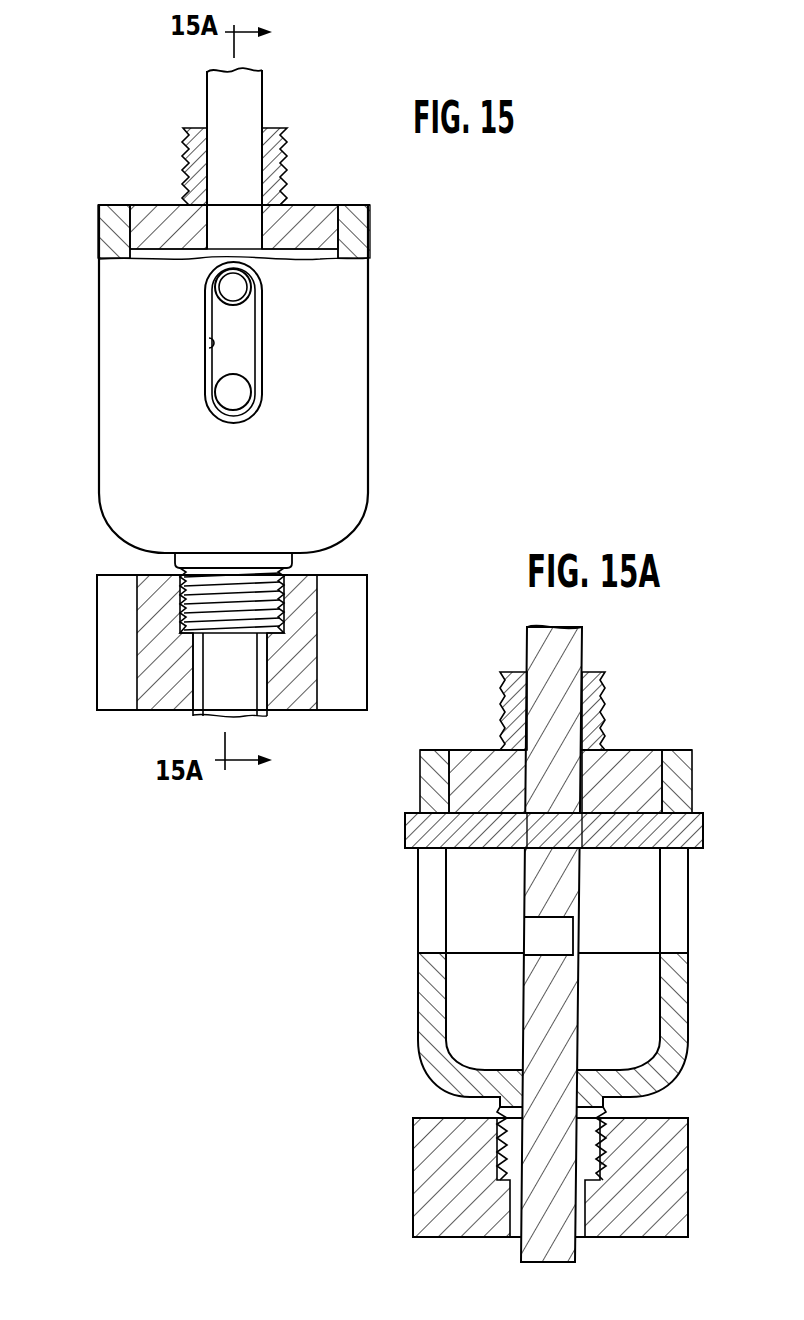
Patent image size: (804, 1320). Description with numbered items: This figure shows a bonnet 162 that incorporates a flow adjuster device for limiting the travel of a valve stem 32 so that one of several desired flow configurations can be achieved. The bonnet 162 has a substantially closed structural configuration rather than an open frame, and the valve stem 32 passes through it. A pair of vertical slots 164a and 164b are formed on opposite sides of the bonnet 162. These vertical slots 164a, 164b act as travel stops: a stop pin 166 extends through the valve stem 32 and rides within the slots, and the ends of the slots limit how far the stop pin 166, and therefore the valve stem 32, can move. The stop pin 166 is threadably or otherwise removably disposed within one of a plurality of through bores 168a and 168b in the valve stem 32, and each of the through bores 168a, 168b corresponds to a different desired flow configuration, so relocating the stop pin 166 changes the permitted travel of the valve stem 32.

In FIG. 15, the valve stem 32 is at (262, 98).
In FIG. 15A, the valve stem 32 is at (583, 642).
In FIG. 15, the bonnet 162 is at (369, 376).
In FIG. 15A, the bonnet 162 is at (690, 1007).
In FIG. 15, the vertical slot 164a is at (208, 340).
In FIG. 15A, the vertical slot 164a is at (446, 953).
In FIG. 15A, the vertical slot 164b is at (661, 956).
In FIG. 15, the stop pin 166 is at (212, 297).
In FIG. 15A, the stop pin 166 is at (404, 832).
In FIG. 15, the through bore 168a is at (212, 290).
In FIG. 15A, the through bore 168a is at (547, 813).
In FIG. 15, the through bore 168b is at (216, 382).
In FIG. 15A, the through bore 168b is at (538, 918).